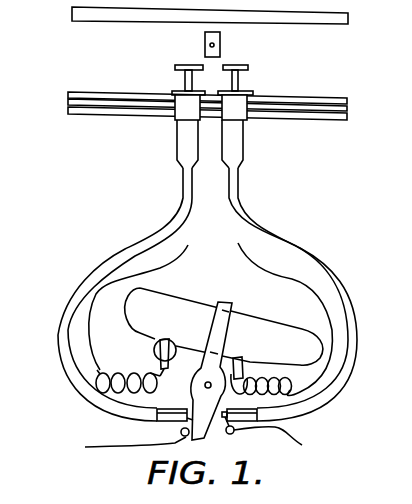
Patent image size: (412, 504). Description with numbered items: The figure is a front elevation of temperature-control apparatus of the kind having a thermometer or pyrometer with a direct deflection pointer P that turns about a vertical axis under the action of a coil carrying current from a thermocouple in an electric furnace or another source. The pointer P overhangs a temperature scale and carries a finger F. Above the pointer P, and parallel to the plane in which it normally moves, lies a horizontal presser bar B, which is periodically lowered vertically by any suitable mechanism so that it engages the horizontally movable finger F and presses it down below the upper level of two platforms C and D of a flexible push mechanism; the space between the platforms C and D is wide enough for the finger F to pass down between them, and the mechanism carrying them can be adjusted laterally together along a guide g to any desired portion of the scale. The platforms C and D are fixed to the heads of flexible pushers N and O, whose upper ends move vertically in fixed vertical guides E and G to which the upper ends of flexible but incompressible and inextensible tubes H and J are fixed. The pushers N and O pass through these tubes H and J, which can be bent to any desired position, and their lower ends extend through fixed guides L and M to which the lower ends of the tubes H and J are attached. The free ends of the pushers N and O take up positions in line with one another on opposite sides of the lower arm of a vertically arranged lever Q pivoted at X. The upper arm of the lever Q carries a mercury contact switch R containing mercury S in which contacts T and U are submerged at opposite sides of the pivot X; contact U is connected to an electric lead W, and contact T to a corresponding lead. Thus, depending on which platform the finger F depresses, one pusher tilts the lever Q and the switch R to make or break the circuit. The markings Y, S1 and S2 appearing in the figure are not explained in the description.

The presser bar B is at (70, 20).
The pointer P is at (202, 45).
The finger F is at (222, 43).
The platform C is at (175, 67).
The platform D is at (250, 68).
The guide g is at (317, 97).
The fixed vertical guide E is at (178, 106).
The fixed vertical guide G is at (237, 108).
The flexible tube H is at (182, 183).
The flexible tube J is at (238, 185).
The chamber Y is at (150, 272).
The electric lead W is at (263, 277).
The mercury contact switch R is at (297, 327).
The mercury S is at (176, 345).
The contact T is at (98, 371).
The contact U is at (300, 365).
The pivot X is at (205, 385).
The fixed guide L is at (157, 419).
The fixed guide M is at (255, 417).
The flexible pusher N is at (181, 432).
The flexible pusher O is at (229, 434).
The lever Q is at (192, 441).
The lead wire S1 is at (129, 450).
The lead wire S2 is at (280, 444).